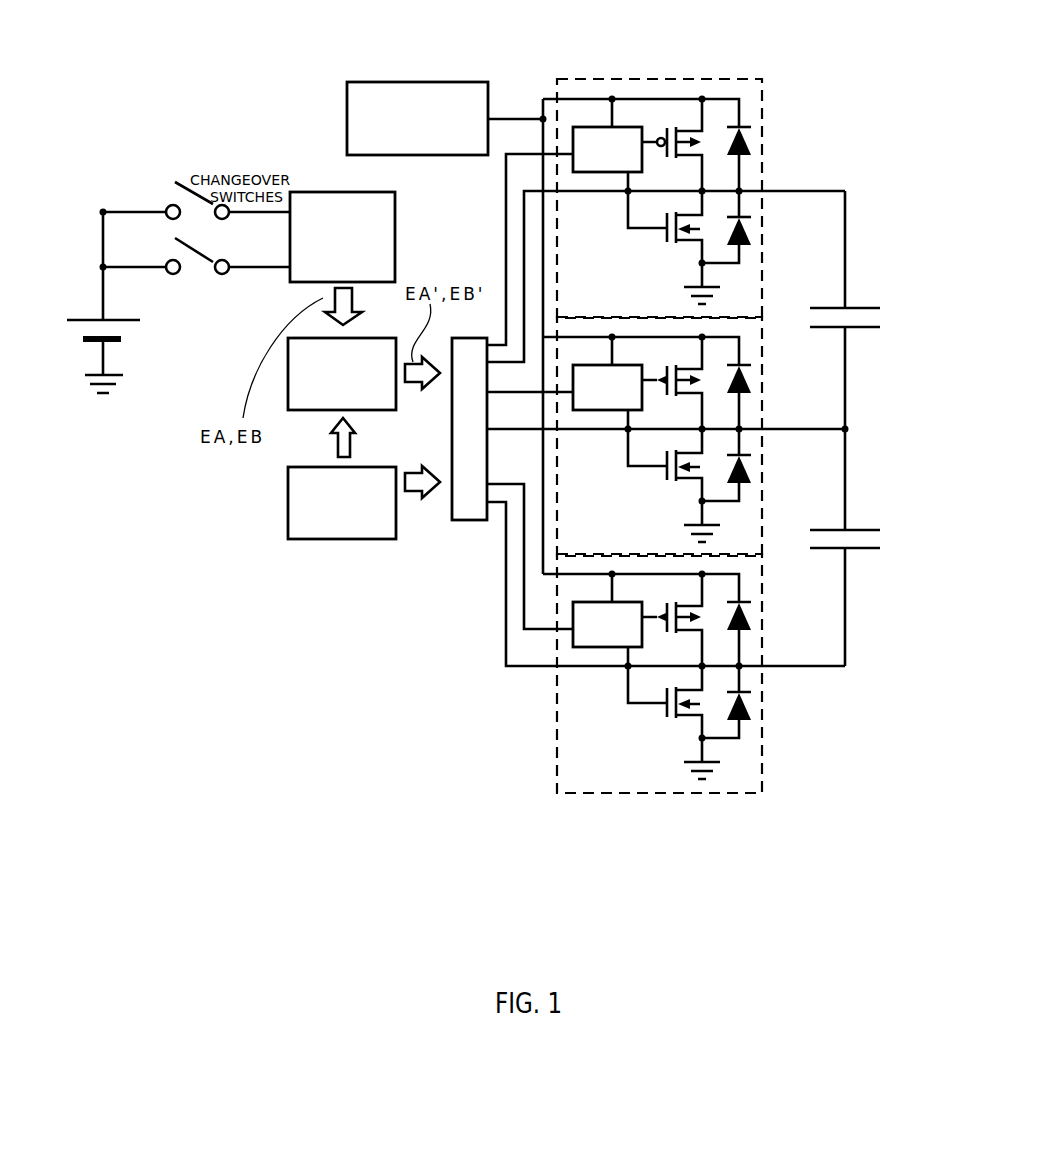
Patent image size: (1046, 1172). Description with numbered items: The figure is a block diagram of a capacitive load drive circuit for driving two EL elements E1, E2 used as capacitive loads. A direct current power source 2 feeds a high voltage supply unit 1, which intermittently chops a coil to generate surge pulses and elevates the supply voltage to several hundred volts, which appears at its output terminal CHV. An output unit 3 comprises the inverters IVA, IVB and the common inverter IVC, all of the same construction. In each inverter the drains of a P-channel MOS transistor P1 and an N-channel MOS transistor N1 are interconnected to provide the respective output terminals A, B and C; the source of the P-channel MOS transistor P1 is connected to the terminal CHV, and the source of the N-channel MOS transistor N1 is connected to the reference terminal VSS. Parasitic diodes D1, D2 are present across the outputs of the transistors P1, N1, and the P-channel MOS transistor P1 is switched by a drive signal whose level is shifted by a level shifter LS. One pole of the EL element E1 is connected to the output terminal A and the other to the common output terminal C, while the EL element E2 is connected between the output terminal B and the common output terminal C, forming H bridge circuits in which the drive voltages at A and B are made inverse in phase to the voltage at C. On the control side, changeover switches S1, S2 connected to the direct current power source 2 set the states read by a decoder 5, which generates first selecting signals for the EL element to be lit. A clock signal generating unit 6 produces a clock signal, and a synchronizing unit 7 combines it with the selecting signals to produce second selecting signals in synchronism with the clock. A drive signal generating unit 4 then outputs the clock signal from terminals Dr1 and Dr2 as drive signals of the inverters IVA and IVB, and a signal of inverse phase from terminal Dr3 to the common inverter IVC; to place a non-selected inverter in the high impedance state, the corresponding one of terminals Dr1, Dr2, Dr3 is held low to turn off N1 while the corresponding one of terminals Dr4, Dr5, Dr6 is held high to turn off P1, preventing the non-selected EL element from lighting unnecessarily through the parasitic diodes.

The high voltage supply unit 1 is at (409, 81).
The direct current power source 2 is at (73, 320).
The output unit 3 is at (697, 415).
The drive signal generating unit 4 is at (465, 522).
The decoder 5 is at (327, 191).
The clock signal generating unit 6 is at (333, 541).
The synchronizing unit 7 is at (378, 412).
The changeover switch S1 is at (170, 205).
The changeover switch S2 is at (176, 273).
The output terminal of the high voltage supply unit CHV is at (498, 117).
The terminal Dr1 is at (521, 230).
The terminal Dr2 is at (501, 601).
The terminal Dr3 is at (500, 431).
The terminal Dr4 is at (515, 153).
The terminal Dr5 is at (522, 629).
The terminal Dr6 is at (520, 394).
The inverter IVA is at (694, 198).
The inverter IVB is at (762, 745).
The common inverter IVC is at (762, 385).
The level shifter LS is at (595, 173).
The P-channel MOS transistor P1 is at (687, 158).
The N-channel MOS transistor N1 is at (665, 243).
The parasitic diode D1 is at (753, 143).
The parasitic diode D2 is at (753, 232).
The reference terminal VSS is at (712, 287).
The EL element E1 is at (862, 330).
The EL element E2 is at (862, 550).
The output terminal A is at (847, 205).
The output terminal B is at (830, 668).
The common output terminal C is at (795, 431).